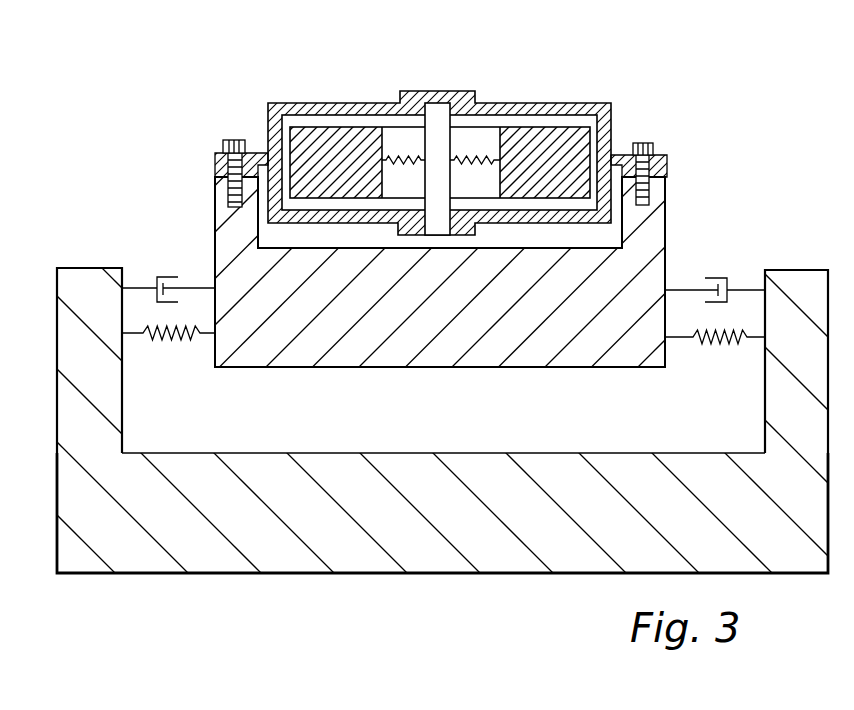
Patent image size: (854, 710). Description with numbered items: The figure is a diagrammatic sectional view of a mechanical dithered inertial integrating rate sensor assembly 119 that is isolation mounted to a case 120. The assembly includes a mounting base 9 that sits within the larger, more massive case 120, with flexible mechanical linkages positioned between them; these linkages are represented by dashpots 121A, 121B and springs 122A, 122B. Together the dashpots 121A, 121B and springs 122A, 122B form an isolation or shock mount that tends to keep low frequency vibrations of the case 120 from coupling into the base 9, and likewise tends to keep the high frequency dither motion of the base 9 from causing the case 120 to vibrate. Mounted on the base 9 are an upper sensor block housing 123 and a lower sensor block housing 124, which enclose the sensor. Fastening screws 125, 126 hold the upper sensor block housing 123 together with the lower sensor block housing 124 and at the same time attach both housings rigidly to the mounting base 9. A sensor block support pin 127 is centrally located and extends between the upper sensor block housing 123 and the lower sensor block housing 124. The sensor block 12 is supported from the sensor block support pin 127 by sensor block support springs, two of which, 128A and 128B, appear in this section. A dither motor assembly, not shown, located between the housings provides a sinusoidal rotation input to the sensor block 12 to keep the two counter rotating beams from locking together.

The dithered inertial integrating rate sensor assembly 119 is at (427, 324).
The case 120 is at (357, 548).
The dashpot 121A is at (742, 288).
The dashpot 121B is at (146, 287).
The spring 122A is at (680, 337).
The spring 122B is at (142, 333).
The mounting base 9 is at (643, 233).
The upper sensor block housing 123 is at (308, 103).
The lower sensor block housing 124 is at (258, 215).
The fastening screw 125 is at (232, 140).
The fastening screw 126 is at (643, 143).
The sensor block support pin 127 is at (438, 110).
The sensor block support spring 128A is at (402, 158).
The sensor block support spring 128B is at (476, 158).
The sensor block 12 is at (577, 140).